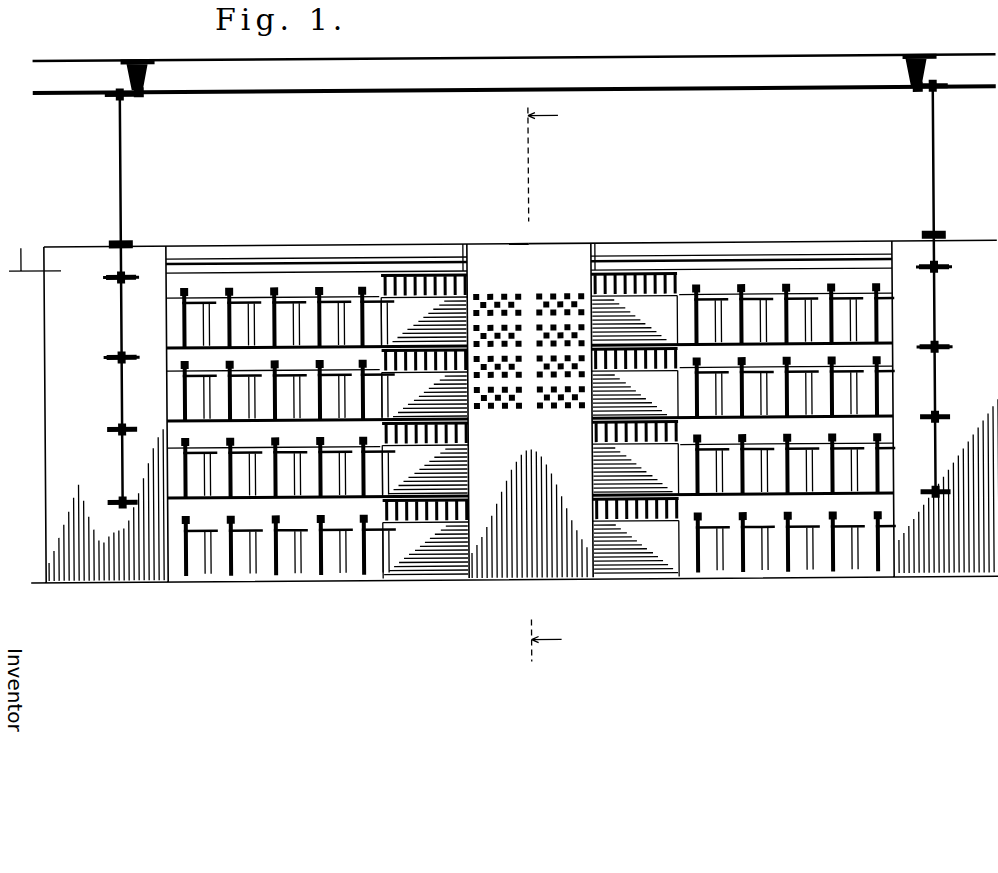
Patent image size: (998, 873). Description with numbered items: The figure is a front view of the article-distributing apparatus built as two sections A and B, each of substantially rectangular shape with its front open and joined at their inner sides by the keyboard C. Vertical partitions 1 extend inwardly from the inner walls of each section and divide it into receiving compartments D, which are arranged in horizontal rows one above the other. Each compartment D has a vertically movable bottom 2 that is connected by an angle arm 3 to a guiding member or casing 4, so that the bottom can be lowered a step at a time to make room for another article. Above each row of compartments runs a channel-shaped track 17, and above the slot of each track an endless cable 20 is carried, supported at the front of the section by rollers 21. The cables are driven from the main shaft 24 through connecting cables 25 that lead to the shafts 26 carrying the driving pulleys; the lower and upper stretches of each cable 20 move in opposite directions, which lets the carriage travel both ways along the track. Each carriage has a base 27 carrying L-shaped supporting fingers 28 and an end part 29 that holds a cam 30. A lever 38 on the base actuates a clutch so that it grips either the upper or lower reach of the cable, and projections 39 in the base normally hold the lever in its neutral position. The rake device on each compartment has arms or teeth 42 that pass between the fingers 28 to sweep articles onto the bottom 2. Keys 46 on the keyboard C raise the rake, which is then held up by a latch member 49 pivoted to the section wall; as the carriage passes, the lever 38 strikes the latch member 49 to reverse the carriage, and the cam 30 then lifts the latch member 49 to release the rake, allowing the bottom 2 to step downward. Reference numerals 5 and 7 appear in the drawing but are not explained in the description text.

The vertical partition 1 is at (900, 370).
The vertically movable bottom 2 is at (262, 310).
The angle arm 3 is at (208, 315).
The guiding member 4 is at (551, 384).
The building wall and base 5 is at (503, 401).
The hanger rod 7 is at (262, 395).
The channel-shaped track 17 is at (258, 272).
The endless cable 20 is at (130, 274).
The roller 21 is at (135, 276).
The main shaft 24 is at (425, 90).
The connecting cable 25 is at (975, 130).
The shaft 26 is at (117, 272).
The base 27 is at (396, 262).
The L-shaped supporting finger 28 is at (410, 270).
The end part 29 is at (440, 304).
The cam 30 is at (452, 292).
The lever 38 is at (470, 262).
The projection 39 is at (463, 265).
The arm or tooth 42 is at (300, 285).
The key 46 is at (556, 415).
The latch member 49 is at (232, 285).
The section A is at (288, 236).
The section B is at (843, 236).
The keyboard C is at (518, 580).
The receiving compartment D is at (183, 395).